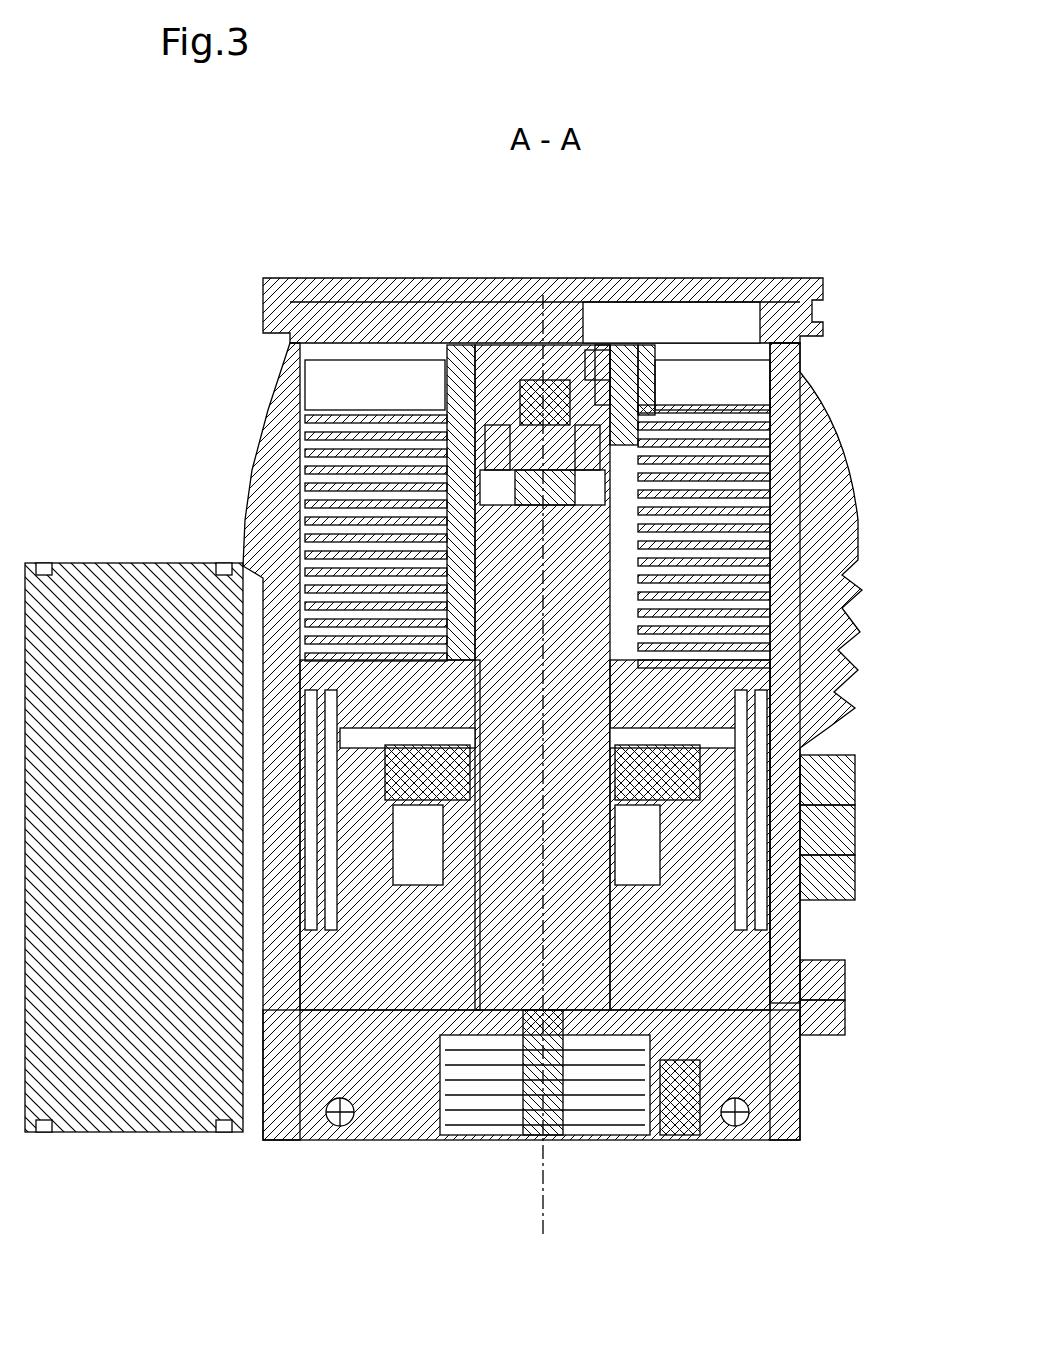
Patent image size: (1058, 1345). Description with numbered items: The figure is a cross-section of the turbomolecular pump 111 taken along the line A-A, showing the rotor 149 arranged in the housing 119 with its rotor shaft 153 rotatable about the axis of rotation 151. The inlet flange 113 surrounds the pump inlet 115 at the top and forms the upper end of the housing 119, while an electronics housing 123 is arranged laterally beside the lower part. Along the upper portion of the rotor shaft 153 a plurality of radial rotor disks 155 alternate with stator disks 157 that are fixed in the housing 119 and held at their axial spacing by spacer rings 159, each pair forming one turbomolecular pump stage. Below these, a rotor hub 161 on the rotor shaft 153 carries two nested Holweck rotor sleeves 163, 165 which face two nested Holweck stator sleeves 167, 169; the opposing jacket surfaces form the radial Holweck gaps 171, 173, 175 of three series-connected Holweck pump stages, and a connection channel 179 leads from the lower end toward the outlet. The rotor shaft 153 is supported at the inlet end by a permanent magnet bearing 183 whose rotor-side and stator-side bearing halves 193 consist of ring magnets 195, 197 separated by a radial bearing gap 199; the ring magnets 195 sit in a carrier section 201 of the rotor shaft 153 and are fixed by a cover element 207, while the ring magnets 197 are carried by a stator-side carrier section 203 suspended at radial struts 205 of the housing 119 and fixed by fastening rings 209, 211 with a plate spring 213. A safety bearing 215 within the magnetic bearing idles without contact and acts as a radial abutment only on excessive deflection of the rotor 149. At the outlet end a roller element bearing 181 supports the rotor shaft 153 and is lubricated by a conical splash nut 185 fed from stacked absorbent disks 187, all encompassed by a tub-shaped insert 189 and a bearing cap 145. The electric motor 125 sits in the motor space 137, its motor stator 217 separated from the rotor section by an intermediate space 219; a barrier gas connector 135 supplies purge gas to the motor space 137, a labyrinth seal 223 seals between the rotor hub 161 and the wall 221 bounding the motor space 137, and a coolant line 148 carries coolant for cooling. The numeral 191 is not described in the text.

The turbomolecular pump 111 is at (203, 197).
The inlet flange 113 is at (805, 312).
The pump inlet 115 is at (474, 262).
The housing 119 is at (795, 478).
The electronics housing 123 is at (68, 563).
The electric motor 125 is at (265, 1050).
The barrier gas connector 135 is at (828, 992).
The motor space 137 is at (340, 1022).
The bearing cap 145 is at (675, 1137).
The coolant line 148 is at (340, 1128).
The rotor 149 is at (727, 463).
The axis of rotation 151 is at (543, 1185).
The rotor shaft 153 is at (625, 510).
The rotor disks 155 is at (312, 440).
The stator disks 157 is at (290, 470).
The spacer rings 159 is at (770, 500).
The rotor hub 161 is at (793, 622).
The outer Holweck rotor sleeve 163 is at (825, 648).
The inner Holweck rotor sleeve 165 is at (826, 860).
The outer Holweck stator sleeve 167 is at (783, 770).
The inner Holweck stator sleeve 169 is at (727, 807).
The radial Holweck gap 171 is at (800, 738).
The radial Holweck gap 173 is at (826, 830).
The radial Holweck gap 175 is at (826, 893).
The connection channel 179 is at (828, 965).
The roller element bearing 181 is at (498, 1122).
The permanent magnet bearing 183 is at (483, 345).
The splash nut 185 is at (560, 1132).
The absorbent disks 187 is at (626, 1137).
The tub-shaped insert 189 is at (395, 1112).
The ring 191 is at (612, 360).
The bearing half 193 is at (505, 430).
The ring magnets at the rotor side 195 is at (645, 352).
The ring magnets at the stator side 197 is at (565, 415).
The radial bearing gap 199 is at (600, 355).
The carrier section 201 is at (660, 390).
The carrier section at the stator side 203 is at (600, 352).
The radial struts 205 is at (348, 318).
The cover element 207 is at (470, 400).
The fastening ring 209 is at (515, 390).
The fastening ring 211 is at (275, 513).
The plate spring 213 is at (745, 447).
The safety bearing 215 is at (492, 365).
The motor stator 217 is at (790, 927).
The intermediate space 219 is at (787, 898).
The wall 221 is at (823, 715).
The labyrinth seal 223 is at (240, 548).